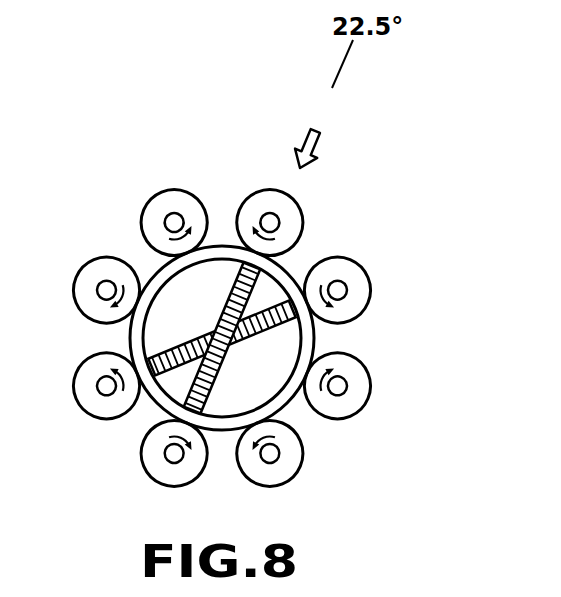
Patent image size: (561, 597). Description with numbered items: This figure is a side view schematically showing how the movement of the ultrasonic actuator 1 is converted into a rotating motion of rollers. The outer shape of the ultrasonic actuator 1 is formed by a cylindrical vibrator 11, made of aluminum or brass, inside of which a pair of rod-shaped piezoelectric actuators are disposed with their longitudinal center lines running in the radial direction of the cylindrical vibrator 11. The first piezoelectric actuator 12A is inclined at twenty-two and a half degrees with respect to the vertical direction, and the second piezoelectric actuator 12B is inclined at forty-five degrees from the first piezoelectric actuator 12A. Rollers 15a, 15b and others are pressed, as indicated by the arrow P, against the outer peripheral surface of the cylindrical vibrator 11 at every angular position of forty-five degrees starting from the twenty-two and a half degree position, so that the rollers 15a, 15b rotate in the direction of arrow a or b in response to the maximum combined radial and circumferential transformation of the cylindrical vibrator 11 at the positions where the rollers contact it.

The ultrasonic actuator 1 is at (146, 410).
The cylindrical vibrator 11 is at (225, 244).
The first piezoelectric actuator 12A is at (262, 272).
The second piezoelectric actuator 12B is at (286, 310).
The roller 15a is at (303, 203).
The roller 15b is at (374, 290).
The arrow P is at (311, 137).